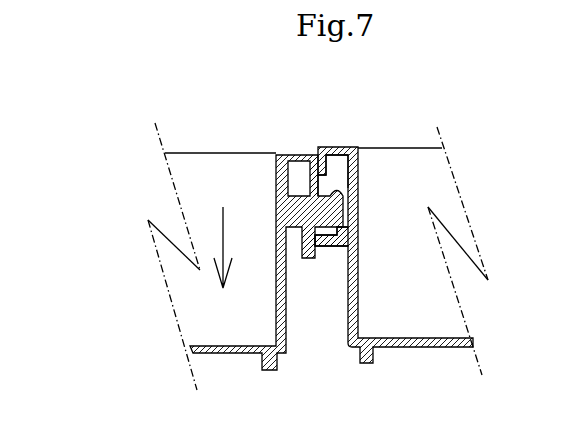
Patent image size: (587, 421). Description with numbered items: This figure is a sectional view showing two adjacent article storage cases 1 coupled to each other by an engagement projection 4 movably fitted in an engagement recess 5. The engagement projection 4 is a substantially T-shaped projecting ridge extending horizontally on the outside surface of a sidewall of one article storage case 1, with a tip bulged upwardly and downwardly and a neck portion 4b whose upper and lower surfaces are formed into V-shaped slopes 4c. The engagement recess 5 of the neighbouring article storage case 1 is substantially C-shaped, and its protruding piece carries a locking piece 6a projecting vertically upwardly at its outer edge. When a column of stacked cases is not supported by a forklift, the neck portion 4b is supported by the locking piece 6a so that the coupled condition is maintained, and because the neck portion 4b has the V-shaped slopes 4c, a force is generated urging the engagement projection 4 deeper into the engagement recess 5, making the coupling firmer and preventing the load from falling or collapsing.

The article storage case 1 is at (64, 113).
The engagement projection 4 is at (301, 228).
The neck portion 4b is at (303, 157).
The V-shaped slopes 4c is at (317, 228).
The engagement recess 5 is at (334, 168).
The locking piece 6a is at (326, 232).